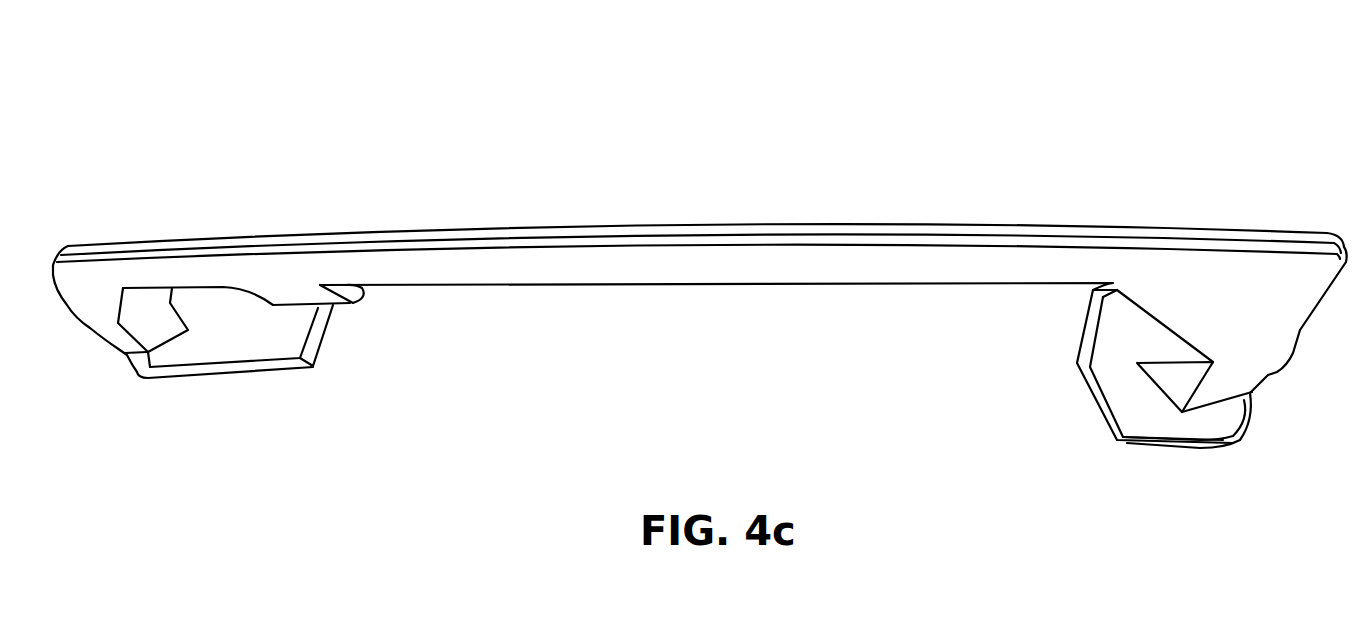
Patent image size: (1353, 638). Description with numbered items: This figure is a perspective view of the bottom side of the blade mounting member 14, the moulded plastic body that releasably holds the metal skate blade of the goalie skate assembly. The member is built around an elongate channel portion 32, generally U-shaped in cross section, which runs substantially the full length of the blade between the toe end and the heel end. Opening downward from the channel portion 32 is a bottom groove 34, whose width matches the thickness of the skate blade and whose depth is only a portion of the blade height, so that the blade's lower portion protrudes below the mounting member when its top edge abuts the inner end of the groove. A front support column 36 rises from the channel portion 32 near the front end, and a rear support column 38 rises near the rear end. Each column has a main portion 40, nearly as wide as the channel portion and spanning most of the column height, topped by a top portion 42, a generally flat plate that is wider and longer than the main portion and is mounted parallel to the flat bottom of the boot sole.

The blade mounting member 14 is at (692, 265).
The bottom groove 34 is at (778, 238).
The channel portion 32 is at (648, 272).
The front support column 36 is at (193, 362).
The second leg 38 is at (1173, 385).
The main portion 40 is at (147, 320).
The top portion 42 is at (257, 352).